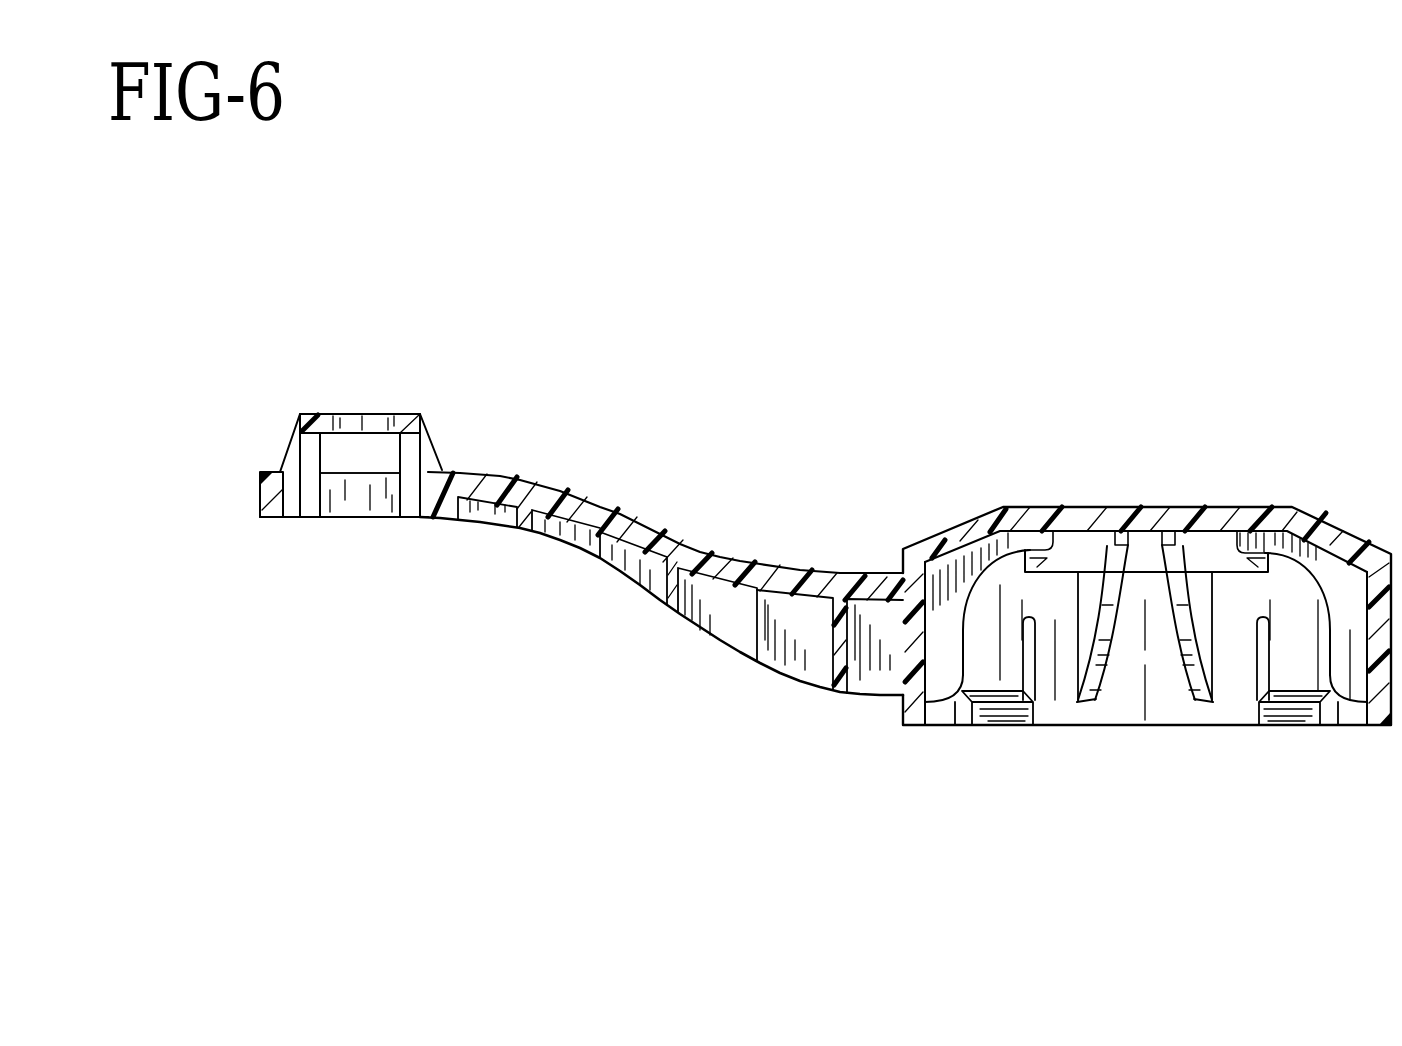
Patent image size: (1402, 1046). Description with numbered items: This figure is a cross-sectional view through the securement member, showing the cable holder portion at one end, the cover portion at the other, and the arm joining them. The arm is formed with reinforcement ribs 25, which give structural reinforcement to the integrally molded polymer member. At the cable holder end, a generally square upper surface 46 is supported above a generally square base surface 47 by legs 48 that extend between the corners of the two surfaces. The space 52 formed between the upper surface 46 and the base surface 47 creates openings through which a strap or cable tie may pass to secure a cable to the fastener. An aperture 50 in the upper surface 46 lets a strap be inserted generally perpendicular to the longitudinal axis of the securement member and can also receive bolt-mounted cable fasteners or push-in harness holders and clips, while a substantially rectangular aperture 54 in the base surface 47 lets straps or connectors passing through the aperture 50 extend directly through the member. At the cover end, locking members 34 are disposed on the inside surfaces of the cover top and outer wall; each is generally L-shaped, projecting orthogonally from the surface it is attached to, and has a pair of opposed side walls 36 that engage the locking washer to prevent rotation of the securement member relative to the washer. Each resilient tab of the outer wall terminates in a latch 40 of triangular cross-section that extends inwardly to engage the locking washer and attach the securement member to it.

The reinforcement ribs 25 is at (670, 610).
The locking members 34 is at (1090, 703).
The side walls 36 is at (1260, 543).
The latch 40 is at (1290, 717).
The upper surface 46 is at (300, 422).
The base surface 47 is at (262, 493).
The legs 48 is at (422, 453).
The aperture 50 is at (361, 412).
The space 52 is at (360, 448).
The aperture 54 is at (342, 518).